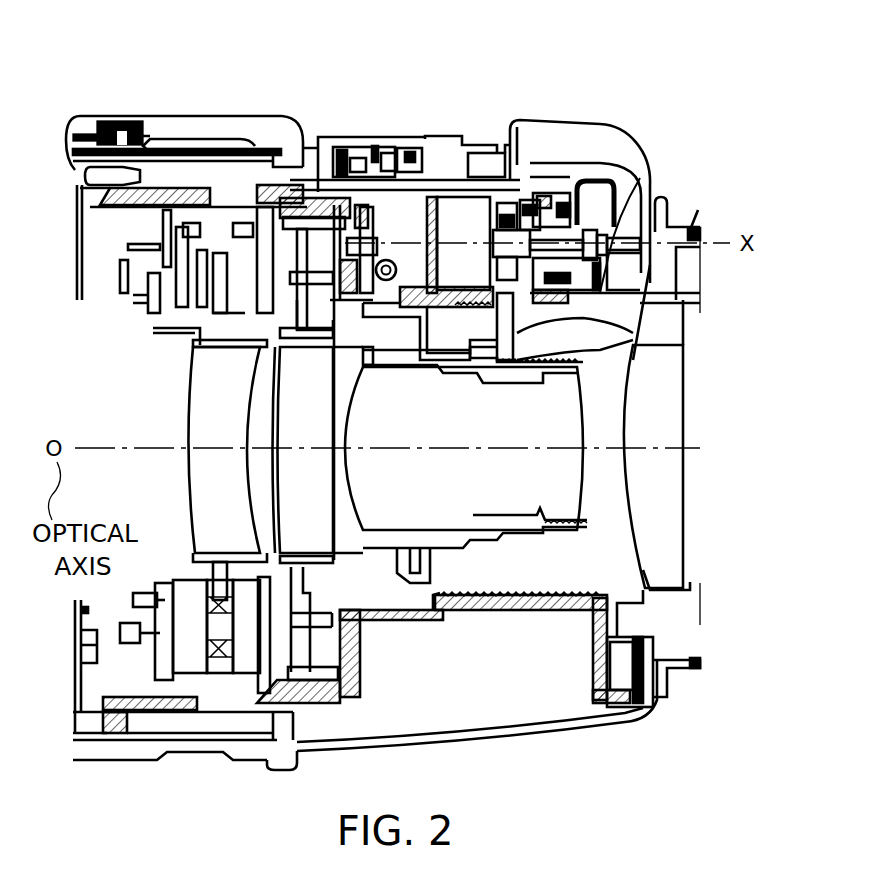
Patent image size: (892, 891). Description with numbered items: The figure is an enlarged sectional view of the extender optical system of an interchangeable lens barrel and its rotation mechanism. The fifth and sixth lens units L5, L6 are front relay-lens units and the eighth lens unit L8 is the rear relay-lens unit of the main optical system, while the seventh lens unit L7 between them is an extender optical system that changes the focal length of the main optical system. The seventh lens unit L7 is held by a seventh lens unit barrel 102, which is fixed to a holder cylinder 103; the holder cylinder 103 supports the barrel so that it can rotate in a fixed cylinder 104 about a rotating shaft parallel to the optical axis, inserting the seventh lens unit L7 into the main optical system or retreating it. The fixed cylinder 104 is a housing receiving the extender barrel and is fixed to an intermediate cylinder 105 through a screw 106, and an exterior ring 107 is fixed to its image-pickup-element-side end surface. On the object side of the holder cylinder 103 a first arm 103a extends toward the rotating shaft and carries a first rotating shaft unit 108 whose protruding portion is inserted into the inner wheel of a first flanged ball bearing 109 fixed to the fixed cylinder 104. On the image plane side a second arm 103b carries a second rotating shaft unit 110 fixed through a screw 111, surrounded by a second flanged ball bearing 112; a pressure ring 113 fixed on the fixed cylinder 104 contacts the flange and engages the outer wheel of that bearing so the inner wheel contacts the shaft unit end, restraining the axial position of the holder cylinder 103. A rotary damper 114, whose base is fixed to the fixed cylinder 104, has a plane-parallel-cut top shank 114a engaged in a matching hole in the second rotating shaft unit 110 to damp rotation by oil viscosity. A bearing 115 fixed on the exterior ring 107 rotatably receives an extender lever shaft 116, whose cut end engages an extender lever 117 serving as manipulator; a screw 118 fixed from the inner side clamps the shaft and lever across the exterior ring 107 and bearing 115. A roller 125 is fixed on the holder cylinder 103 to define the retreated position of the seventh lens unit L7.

The seventh lens unit barrel 102 is at (545, 380).
The holder cylinder 103 is at (520, 325).
The first arm 103a is at (376, 242).
The second arm 103b is at (560, 320).
The fixed cylinder 104 is at (443, 620).
The intermediate cylinder 105 is at (77, 117).
The screw 106 is at (124, 117).
The exterior ring 107 is at (473, 740).
The first rotating shaft unit 108 is at (400, 205).
The first flanged ball bearing 109 is at (378, 262).
The second rotating shaft unit 110 is at (565, 235).
The screw 111 is at (612, 267).
The second flanged ball bearing 112 is at (530, 200).
The pressure ring 113 is at (612, 182).
The rotary damper 114 is at (470, 208).
The top shank 114a is at (499, 203).
The bearing 115 is at (640, 178).
The extender lever shaft 116 is at (617, 275).
The extender lever 117 is at (598, 126).
The screw 118 is at (628, 223).
The roller 125 is at (280, 118).
The fifth lens unit L5 is at (224, 450).
The sixth lens unit L6 is at (303, 450).
The seventh lens unit L7 is at (464, 448).
The eighth lens unit L8 is at (653, 466).